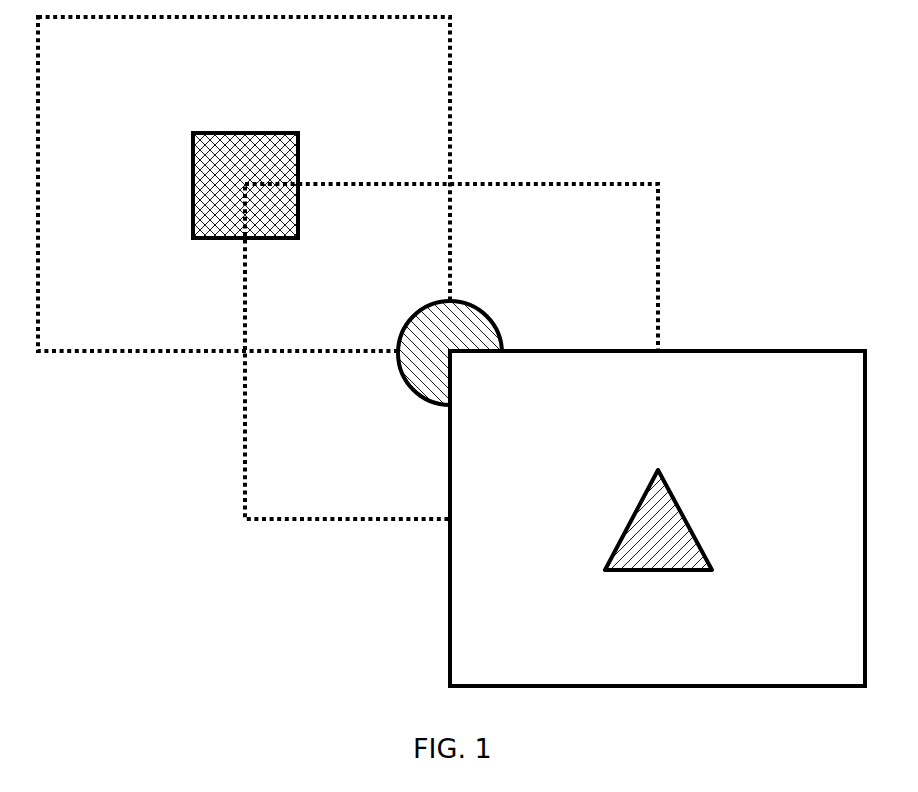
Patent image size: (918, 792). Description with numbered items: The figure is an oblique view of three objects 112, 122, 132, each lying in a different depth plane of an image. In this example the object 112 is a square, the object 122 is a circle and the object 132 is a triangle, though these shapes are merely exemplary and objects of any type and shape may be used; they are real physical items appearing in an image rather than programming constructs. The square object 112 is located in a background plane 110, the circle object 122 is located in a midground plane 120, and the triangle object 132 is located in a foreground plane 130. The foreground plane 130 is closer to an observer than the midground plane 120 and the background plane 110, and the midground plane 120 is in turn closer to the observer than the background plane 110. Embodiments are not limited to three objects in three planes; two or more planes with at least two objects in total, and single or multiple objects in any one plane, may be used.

The background plane 110 is at (450, 67).
The object 112 is at (296, 159).
The midground plane 120 is at (658, 247).
The object 122 is at (497, 339).
The foreground plane 130 is at (774, 351).
The object 132 is at (698, 545).